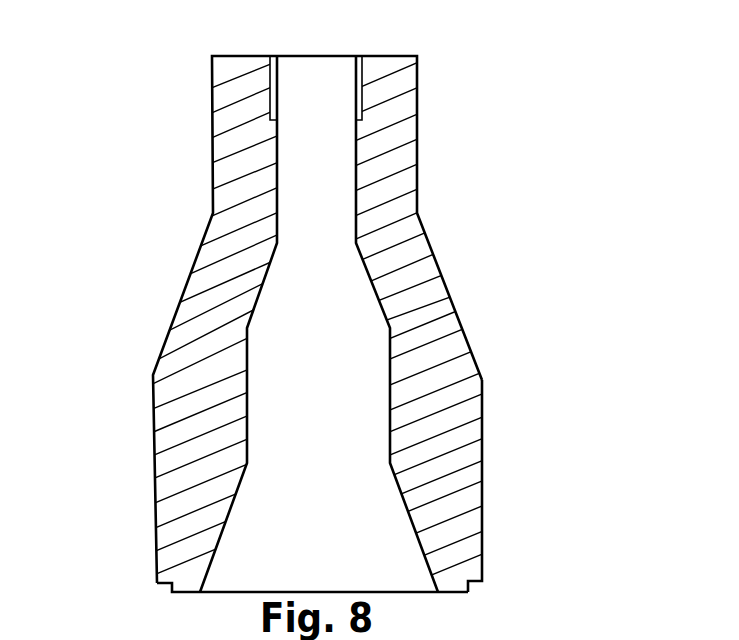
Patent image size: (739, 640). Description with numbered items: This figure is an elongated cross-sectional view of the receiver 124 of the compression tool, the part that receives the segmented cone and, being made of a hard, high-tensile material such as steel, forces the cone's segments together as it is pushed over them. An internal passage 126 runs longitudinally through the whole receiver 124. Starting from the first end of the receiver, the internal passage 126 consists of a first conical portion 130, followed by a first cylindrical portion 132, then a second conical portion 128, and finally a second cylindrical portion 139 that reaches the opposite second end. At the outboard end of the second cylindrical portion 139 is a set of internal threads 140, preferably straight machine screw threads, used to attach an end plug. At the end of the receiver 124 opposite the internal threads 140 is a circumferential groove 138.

The receiver 124 is at (434, 80).
The internal passage 126 is at (340, 310).
The second conical portion 128 is at (370, 258).
The first conical portion 130 is at (482, 468).
The first cylindrical portion 132 is at (398, 403).
The circumferential groove 138 is at (478, 588).
The second cylindrical portion 139 is at (275, 183).
The internal threads 140 is at (358, 75).